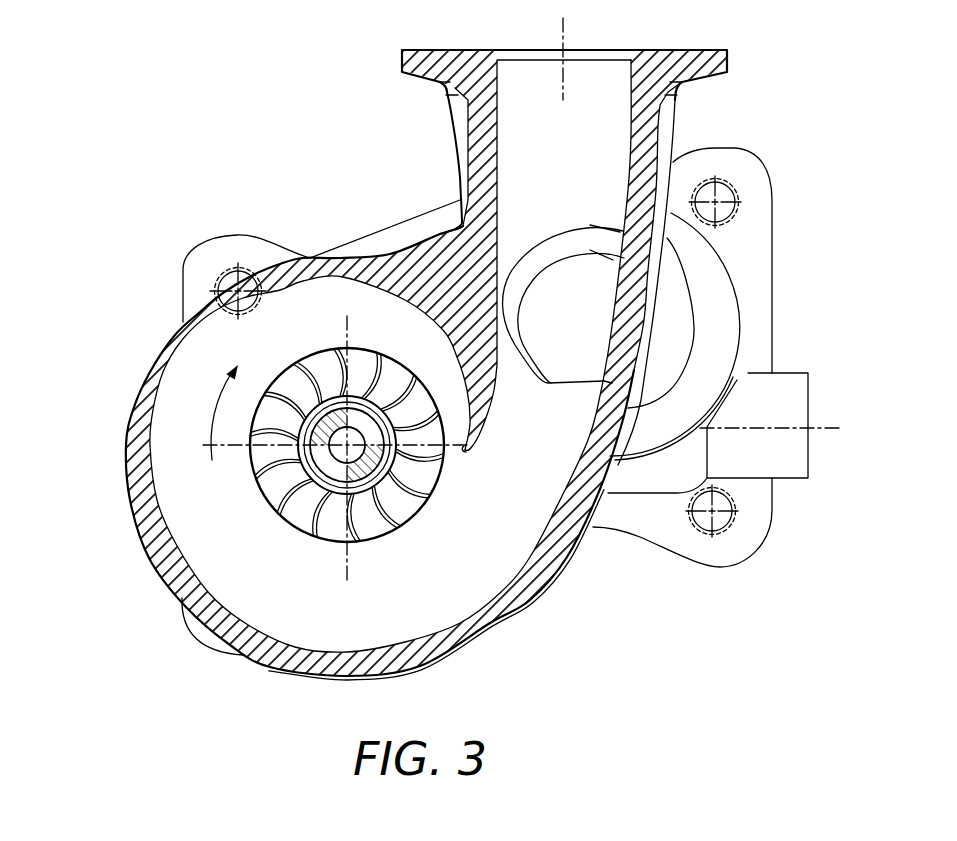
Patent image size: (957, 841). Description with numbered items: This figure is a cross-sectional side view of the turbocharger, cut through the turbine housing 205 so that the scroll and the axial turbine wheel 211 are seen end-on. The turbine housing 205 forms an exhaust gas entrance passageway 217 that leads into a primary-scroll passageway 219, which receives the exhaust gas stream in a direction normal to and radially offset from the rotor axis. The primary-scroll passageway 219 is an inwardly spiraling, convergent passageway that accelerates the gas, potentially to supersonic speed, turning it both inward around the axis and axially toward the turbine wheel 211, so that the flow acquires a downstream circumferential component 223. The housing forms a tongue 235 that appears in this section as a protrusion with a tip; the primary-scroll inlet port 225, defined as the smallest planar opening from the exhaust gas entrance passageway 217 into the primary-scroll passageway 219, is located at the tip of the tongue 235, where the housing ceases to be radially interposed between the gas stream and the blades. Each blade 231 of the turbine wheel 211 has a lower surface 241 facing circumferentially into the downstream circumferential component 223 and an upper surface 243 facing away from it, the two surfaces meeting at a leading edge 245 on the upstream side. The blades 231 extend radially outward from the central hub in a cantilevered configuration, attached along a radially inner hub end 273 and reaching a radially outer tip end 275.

The turbine housing 205 is at (765, 210).
The axial turbine wheel 211 is at (265, 465).
The exhaust gas entrance passageway 217 is at (570, 426).
The primary-scroll passageway 219 is at (493, 540).
The downstream circumferential component 223 is at (212, 425).
The primary-scroll inlet port 225 is at (525, 495).
The blade 231 is at (325, 510).
The tongue 235 is at (472, 443).
The lower surface 241 is at (283, 383).
The upper surface 243 is at (342, 383).
The leading edge 245 is at (285, 387).
The hub end 273 is at (392, 475).
The tip end 275 is at (392, 463).